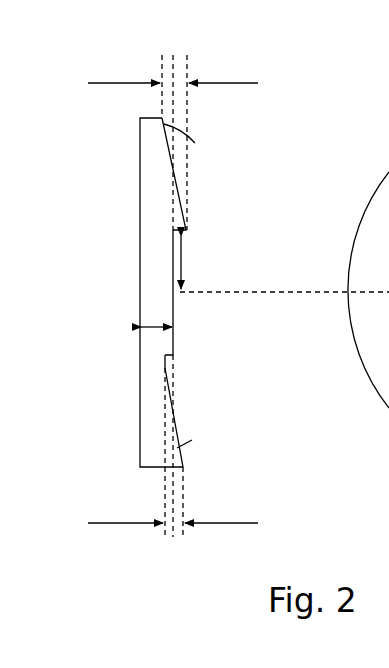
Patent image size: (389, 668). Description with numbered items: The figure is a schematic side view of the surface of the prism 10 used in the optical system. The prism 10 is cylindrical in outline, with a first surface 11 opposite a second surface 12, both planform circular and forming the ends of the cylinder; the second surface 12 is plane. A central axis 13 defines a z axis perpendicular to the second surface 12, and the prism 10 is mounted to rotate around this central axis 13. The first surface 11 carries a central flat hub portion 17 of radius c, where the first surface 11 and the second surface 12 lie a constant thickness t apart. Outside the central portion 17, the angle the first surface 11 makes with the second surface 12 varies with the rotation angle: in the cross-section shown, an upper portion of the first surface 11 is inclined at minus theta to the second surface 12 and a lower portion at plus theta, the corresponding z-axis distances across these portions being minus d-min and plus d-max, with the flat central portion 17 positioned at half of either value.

The prism element 10 is at (259, 130).
The first surface 11 is at (167, 368).
The second surface 12 is at (140, 357).
The central axis 13 is at (239, 291).
The central flat hub portion 17 is at (173, 308).